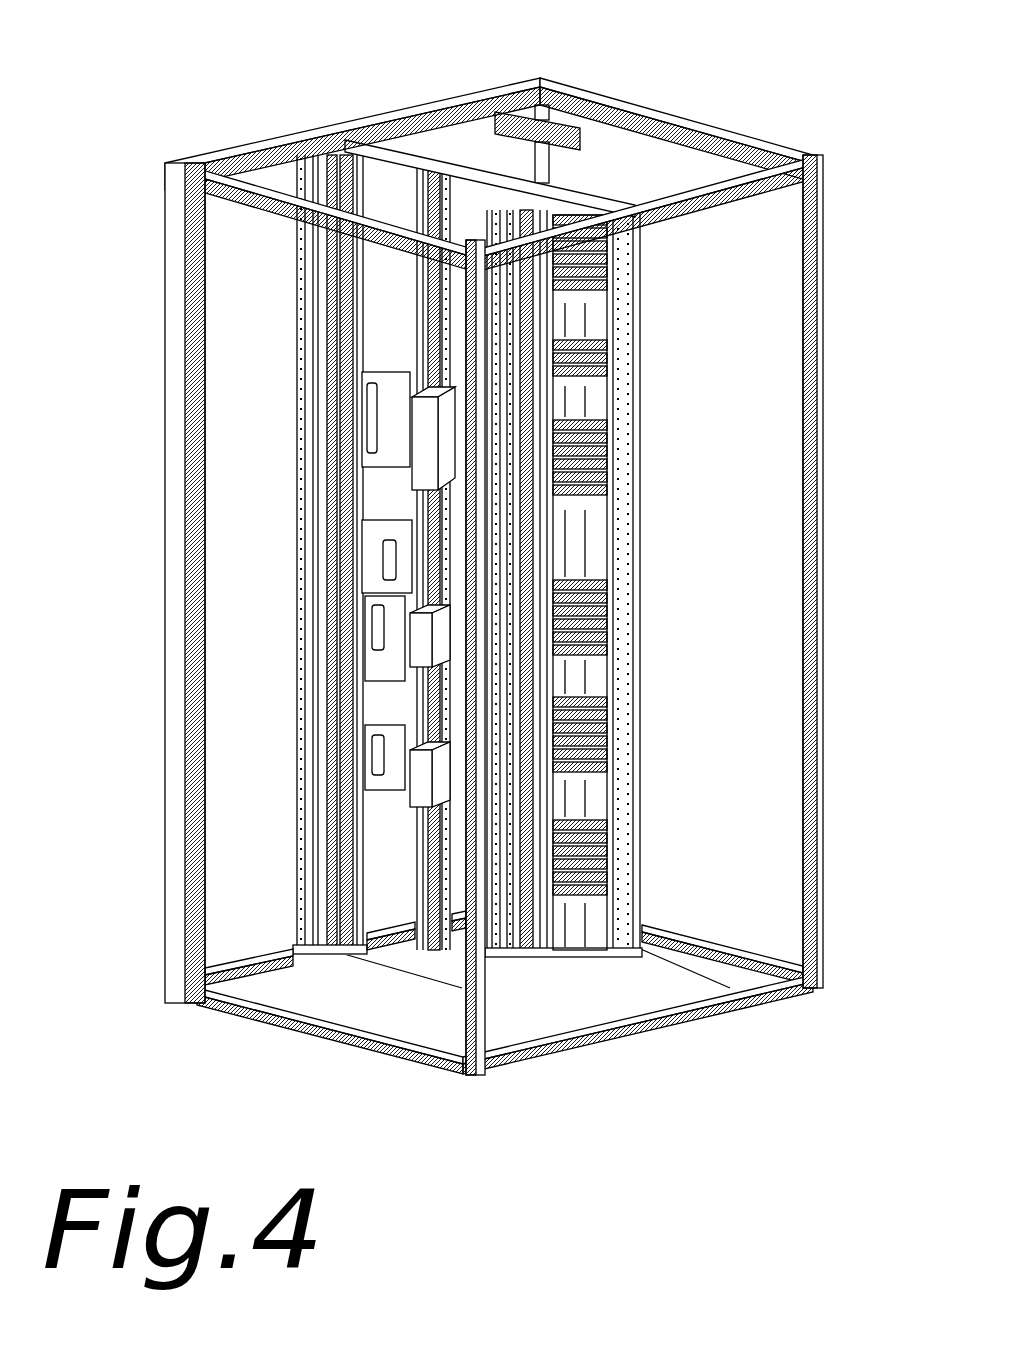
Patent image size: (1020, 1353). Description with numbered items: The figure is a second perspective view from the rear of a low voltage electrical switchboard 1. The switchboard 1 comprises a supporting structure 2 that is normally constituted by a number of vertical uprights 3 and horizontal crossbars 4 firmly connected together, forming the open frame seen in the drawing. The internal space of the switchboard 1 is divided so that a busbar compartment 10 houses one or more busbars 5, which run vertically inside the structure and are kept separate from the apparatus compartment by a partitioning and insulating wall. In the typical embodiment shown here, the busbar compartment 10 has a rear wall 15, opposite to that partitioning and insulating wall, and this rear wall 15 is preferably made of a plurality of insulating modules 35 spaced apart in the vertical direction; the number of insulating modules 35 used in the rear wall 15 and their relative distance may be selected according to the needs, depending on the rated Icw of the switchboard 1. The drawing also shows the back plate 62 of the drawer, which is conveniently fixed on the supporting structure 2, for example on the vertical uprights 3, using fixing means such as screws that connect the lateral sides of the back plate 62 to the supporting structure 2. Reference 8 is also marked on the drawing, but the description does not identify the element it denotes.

The low voltage electrical switchboard 1 is at (104, 96).
The supporting structure 2 is at (469, 561).
The vertical uprights 3 is at (198, 362).
The horizontal crossbars 4 is at (718, 138).
The busbars 5 is at (520, 1100).
The mounting rail 8 is at (402, 398).
The busbar compartment 10 is at (572, 288).
The rear wall 15 is at (630, 493).
The insulating modules 35 is at (552, 36).
The back plate 62 is at (398, 468).